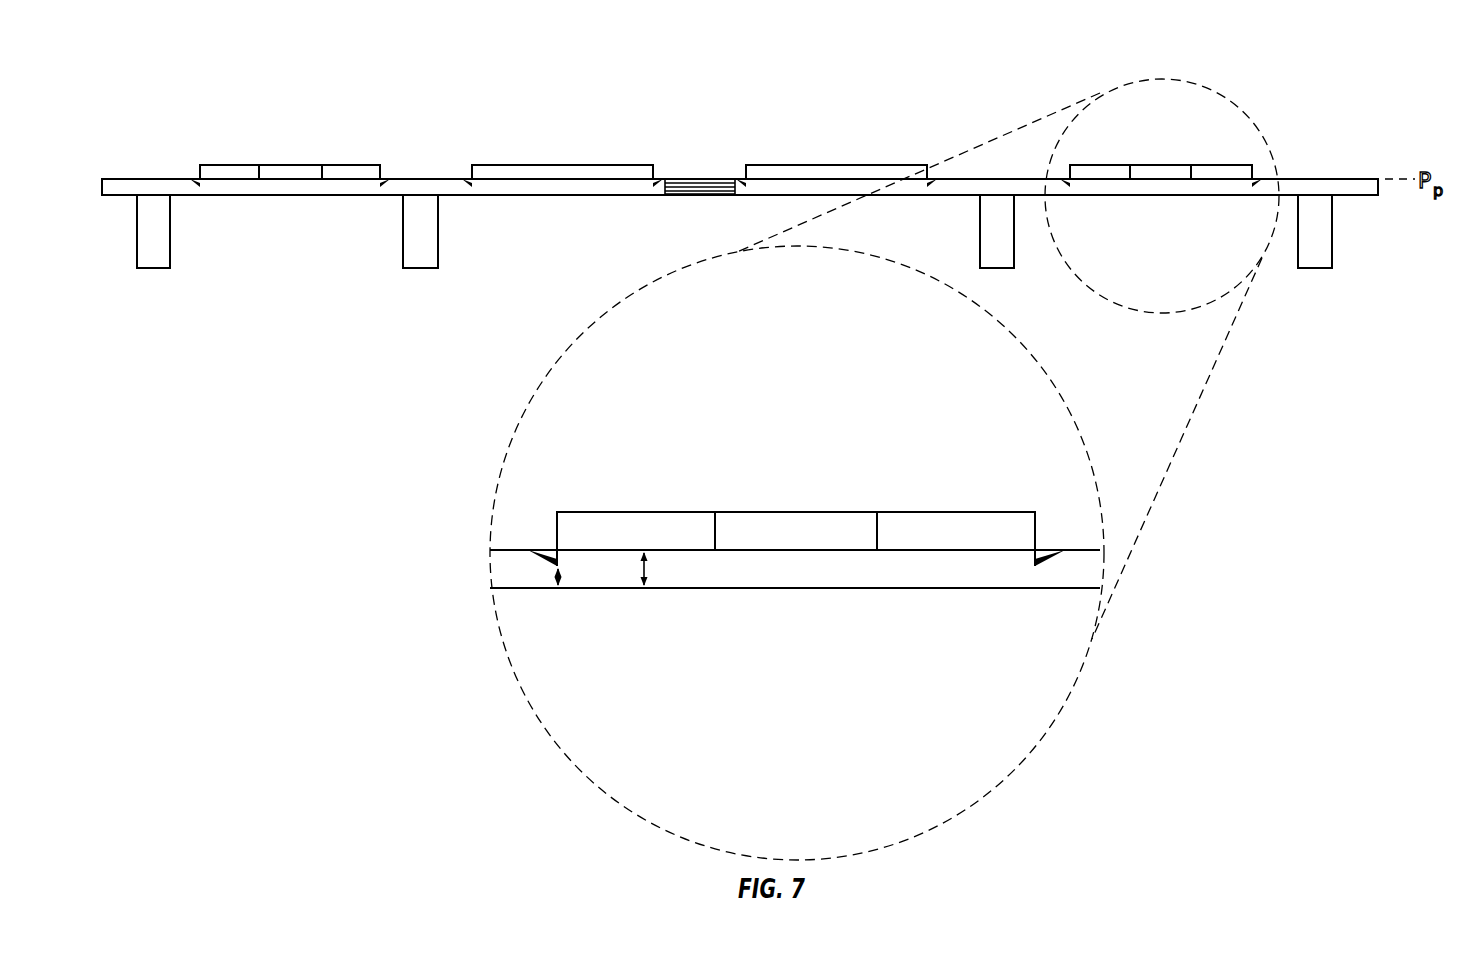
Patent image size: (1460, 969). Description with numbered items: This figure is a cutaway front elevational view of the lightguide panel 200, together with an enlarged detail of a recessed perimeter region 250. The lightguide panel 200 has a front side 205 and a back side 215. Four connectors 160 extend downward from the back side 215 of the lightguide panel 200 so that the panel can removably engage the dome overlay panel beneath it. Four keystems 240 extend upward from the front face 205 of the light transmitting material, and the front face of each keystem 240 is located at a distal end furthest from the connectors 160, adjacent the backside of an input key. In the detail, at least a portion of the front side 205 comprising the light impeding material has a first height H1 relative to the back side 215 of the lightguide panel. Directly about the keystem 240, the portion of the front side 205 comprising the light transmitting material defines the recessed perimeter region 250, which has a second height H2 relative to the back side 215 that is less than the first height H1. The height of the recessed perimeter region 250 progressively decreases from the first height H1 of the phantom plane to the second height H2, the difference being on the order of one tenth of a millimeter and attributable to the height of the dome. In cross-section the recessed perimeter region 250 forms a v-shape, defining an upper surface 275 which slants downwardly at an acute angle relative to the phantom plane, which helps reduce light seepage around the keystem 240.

The lightguide panel 200 is at (173, 138).
The connector 160 is at (152, 270).
The keystem 240 is at (565, 160).
The front side 205 is at (509, 548).
The back side 215 is at (797, 592).
The upper surface 275 is at (542, 562).
The recessed perimeter region 250 is at (1030, 557).
The first height H1 is at (648, 575).
The second height H2 is at (560, 575).